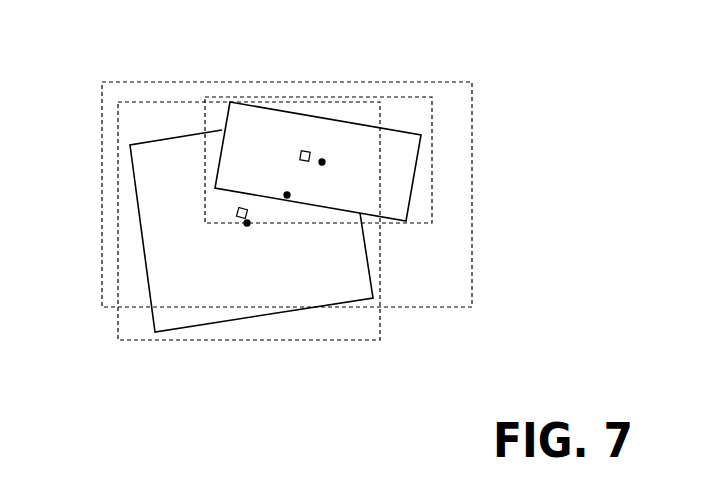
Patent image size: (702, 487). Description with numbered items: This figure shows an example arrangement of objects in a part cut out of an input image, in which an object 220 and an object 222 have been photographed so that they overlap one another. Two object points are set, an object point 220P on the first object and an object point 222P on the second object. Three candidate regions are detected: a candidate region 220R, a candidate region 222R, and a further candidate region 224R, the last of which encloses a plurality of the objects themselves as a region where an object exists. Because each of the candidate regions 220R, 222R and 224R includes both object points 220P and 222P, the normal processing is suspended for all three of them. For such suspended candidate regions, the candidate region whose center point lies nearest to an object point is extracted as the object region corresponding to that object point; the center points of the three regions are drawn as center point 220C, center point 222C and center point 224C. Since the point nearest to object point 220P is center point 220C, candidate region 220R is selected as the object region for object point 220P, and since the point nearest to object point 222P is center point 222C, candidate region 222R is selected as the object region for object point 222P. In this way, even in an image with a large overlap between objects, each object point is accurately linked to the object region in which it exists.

The object 220 is at (143, 260).
The object 222 is at (310, 116).
The object point 220P is at (238, 216).
The object point 222P is at (300, 154).
The center point 220C is at (247, 226).
The center point 222C is at (326, 162).
The candidate region 220R is at (180, 340).
The candidate region 222R is at (432, 175).
The candidate region 224R is at (472, 248).
The center point 224C is at (290, 200).